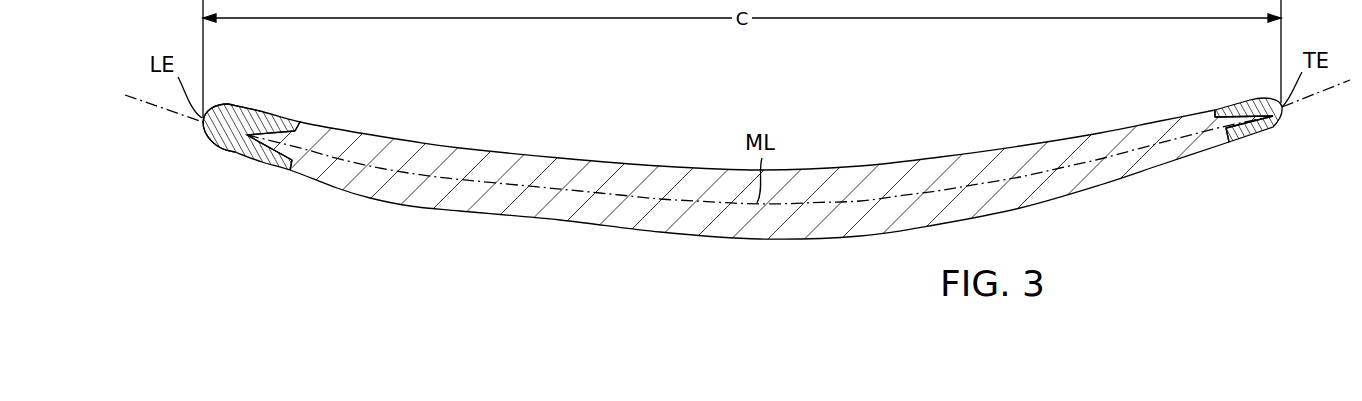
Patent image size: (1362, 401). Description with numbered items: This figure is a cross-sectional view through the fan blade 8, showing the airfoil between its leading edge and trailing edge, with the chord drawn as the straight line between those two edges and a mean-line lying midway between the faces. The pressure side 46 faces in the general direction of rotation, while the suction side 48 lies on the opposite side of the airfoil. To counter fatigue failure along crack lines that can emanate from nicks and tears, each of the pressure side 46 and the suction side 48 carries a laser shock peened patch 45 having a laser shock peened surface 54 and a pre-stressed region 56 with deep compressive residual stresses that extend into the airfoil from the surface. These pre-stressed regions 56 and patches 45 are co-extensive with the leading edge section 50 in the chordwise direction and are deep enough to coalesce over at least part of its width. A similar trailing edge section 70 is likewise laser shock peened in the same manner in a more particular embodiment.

The fan blade 8 is at (746, 189).
The laser shock peened patch 45 is at (265, 110).
The pressure side 46 is at (637, 163).
The suction side 48 is at (580, 228).
The leading edge section 50 is at (202, 133).
The laser shock peened surface 54 is at (238, 106).
The pre-stressed region 56 is at (282, 120).
The trailing edge section 70 is at (1277, 127).